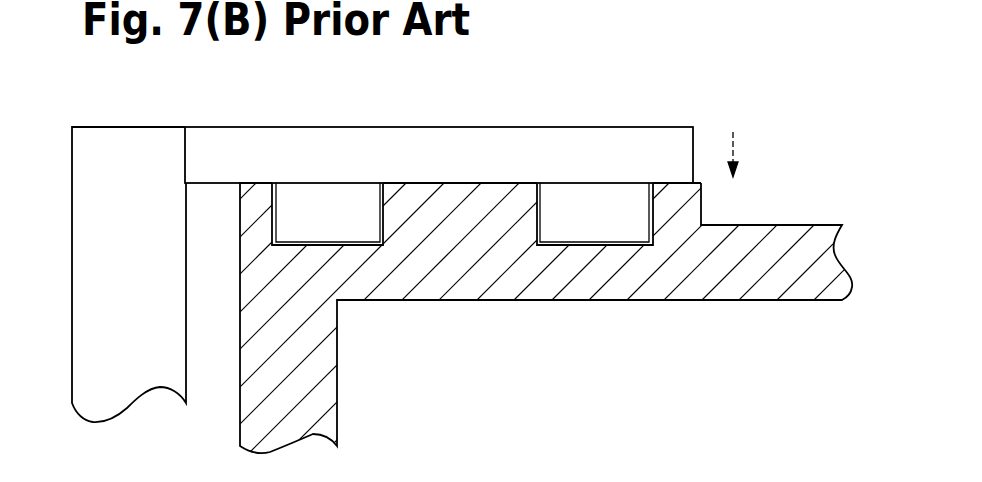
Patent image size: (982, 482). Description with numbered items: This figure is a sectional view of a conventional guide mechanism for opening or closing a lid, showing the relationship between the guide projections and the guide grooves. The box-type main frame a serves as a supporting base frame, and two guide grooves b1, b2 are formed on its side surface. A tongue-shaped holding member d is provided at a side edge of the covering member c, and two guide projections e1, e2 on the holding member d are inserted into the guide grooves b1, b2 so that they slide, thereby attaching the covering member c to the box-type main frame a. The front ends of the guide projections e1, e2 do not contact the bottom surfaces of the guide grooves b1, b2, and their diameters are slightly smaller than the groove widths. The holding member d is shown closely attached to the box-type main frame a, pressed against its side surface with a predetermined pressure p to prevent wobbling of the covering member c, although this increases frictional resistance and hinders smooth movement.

The box-type main frame a is at (785, 276).
The guide groove b1 is at (342, 248).
The guide groove b2 is at (601, 250).
The covering member c is at (139, 170).
The holding member d is at (492, 162).
The guide projection e1 is at (332, 208).
The guide projection e2 is at (606, 215).
The predetermined pressure p is at (734, 140).